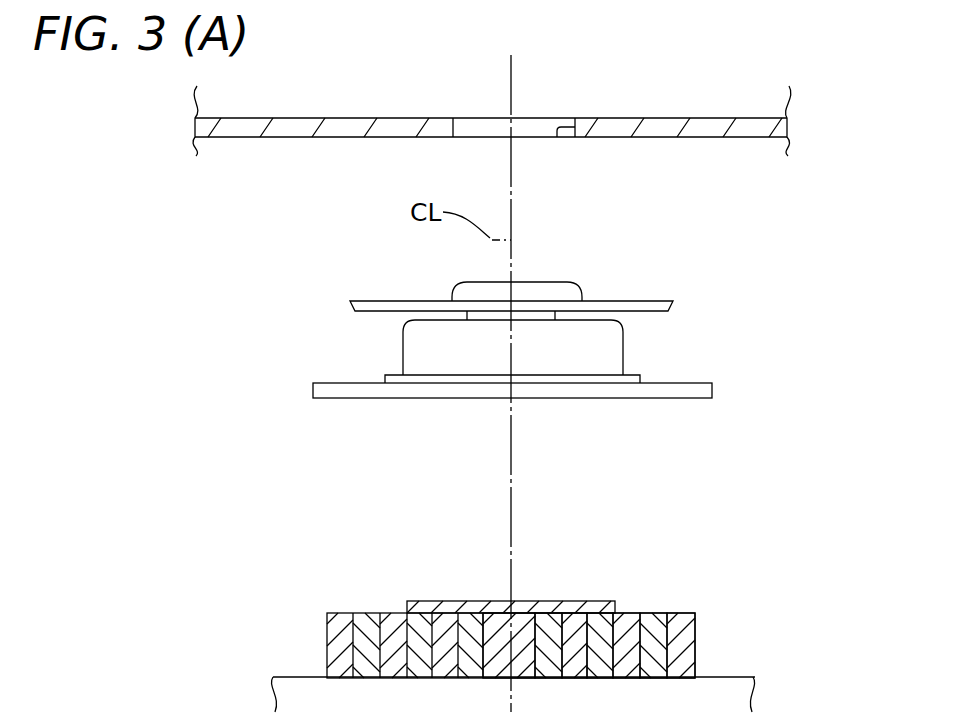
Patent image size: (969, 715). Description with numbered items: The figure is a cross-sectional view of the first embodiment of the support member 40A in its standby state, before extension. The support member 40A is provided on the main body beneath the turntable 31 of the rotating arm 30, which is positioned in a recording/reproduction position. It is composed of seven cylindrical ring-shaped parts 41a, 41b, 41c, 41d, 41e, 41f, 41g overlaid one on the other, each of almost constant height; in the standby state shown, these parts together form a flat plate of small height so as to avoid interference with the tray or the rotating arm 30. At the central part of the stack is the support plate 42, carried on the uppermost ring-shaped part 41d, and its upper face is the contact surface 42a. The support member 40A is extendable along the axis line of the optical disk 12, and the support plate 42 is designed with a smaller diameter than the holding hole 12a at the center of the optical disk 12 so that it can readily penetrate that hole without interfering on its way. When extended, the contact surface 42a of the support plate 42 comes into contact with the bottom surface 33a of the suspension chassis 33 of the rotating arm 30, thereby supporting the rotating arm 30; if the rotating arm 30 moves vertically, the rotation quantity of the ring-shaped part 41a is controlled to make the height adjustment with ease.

The optical disk 12 is at (656, 118).
The holding hole 12a is at (556, 138).
The rotating arm 30 is at (501, 347).
The turntable 31 is at (583, 261).
The suspension chassis 33 is at (553, 314).
The bottom surface 33a is at (330, 398).
The support member 40A is at (591, 567).
The ring-shaped part 41a is at (735, 618).
The ring-shaped part 41b is at (655, 620).
The ring-shaped part 41c is at (628, 620).
The ring-shaped part 41d is at (602, 630).
The ring-shaped part 41e is at (577, 630).
The ring-shaped part 41f is at (550, 630).
The ring-shaped part 41g is at (497, 630).
The support plate 42 is at (405, 603).
The contact surface 42a is at (448, 600).